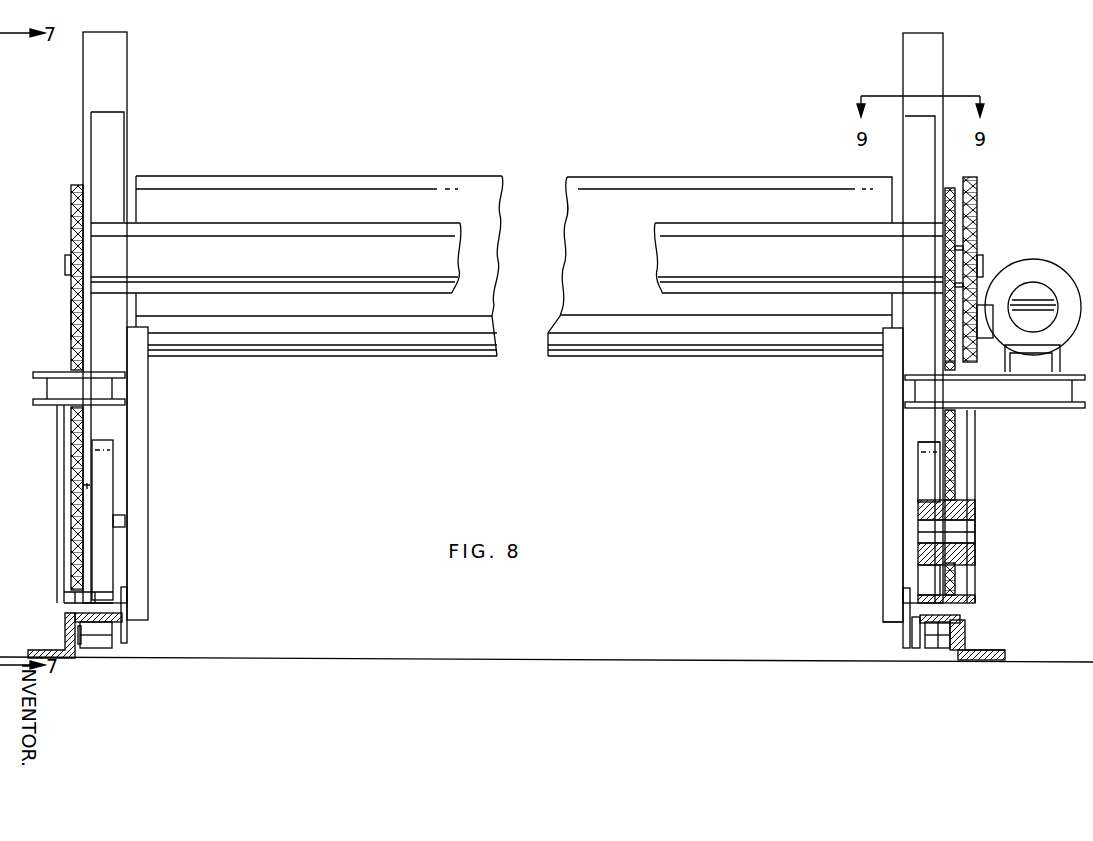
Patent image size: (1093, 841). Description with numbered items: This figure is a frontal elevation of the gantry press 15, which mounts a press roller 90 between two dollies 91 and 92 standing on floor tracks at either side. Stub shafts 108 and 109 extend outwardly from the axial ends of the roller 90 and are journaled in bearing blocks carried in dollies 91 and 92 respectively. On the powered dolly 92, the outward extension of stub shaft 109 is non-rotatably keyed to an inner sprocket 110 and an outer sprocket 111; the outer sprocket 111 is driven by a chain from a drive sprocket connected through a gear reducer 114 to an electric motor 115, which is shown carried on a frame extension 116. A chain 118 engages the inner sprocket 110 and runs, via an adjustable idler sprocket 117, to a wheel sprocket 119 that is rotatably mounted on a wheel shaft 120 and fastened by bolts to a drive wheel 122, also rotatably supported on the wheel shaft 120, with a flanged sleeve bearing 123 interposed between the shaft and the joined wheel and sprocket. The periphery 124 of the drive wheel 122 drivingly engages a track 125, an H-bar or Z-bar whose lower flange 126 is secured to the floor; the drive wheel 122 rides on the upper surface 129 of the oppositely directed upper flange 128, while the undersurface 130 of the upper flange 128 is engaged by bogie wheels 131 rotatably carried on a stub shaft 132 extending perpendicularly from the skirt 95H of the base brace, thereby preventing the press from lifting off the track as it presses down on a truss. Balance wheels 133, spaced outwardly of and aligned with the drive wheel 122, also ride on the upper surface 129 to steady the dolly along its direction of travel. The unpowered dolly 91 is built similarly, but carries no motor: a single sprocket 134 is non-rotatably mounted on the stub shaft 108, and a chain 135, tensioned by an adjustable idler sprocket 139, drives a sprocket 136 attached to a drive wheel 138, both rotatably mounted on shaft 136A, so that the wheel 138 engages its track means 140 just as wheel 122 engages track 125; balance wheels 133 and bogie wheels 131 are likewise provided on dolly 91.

The gantry press 15 is at (500, 150).
The press roller 90 is at (229, 200).
The dolly 91 is at (127, 153).
The dolly 92 is at (915, 82).
The skirt 95H is at (905, 630).
The stub shaft 108 is at (66, 268).
The stub shaft 109 is at (983, 265).
The inner sprocket 110 is at (948, 192).
The outer sprocket 111 is at (977, 210).
The gear reducer 114 is at (992, 342).
The electric motor 115 is at (1042, 278).
The frame extension 116 is at (1040, 393).
The adjustable idler sprocket 117 is at (950, 368).
The chain 118 is at (953, 455).
The wheel sprocket 119 is at (955, 502).
The wheel shaft 120 is at (975, 536).
The drive wheel 122 is at (930, 470).
The flanged sleeve bearing 123 is at (925, 527).
The periphery 124 is at (925, 440).
The track 125 is at (967, 640).
The lower flange 126 is at (970, 658).
The upper flange 128 is at (925, 625).
The upper surface 129 is at (955, 614).
The undersurface 130 is at (940, 630).
The bogie wheel 131 is at (98, 636).
The stub shaft 132 is at (990, 657).
The balance wheel 133 is at (105, 585).
The sprocket 134 is at (71, 206).
The chain 135 is at (72, 316).
The sprocket 136 is at (75, 572).
The shaft 136A is at (120, 527).
The drive wheel 138 is at (97, 465).
The adjustable idler sprocket 139 is at (72, 372).
The track means 140 is at (68, 626).